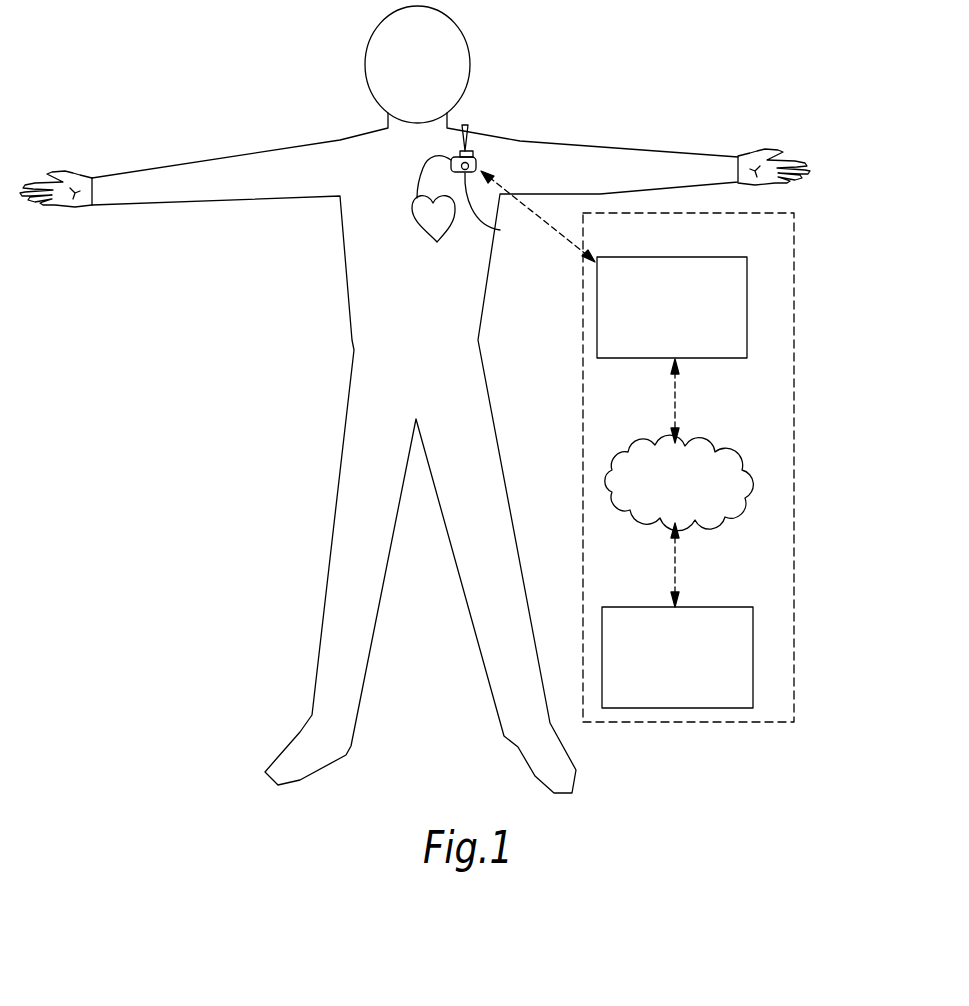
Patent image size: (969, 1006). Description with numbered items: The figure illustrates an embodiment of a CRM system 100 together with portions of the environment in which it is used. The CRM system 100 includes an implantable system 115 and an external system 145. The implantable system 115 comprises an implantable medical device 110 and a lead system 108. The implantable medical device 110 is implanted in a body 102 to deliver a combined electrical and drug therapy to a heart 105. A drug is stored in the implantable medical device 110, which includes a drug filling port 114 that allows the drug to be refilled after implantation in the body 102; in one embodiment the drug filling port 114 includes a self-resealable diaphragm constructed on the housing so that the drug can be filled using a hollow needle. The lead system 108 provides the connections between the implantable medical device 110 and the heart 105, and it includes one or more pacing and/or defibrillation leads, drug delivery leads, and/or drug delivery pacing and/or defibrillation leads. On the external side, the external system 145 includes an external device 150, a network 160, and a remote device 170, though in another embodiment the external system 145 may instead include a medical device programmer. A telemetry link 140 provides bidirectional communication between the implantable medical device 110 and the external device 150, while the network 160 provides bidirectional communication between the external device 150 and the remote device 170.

The CRM system 100 is at (757, 37).
The body 102 is at (353, 308).
The heart 105 is at (413, 220).
The lead system 108 is at (415, 173).
The implantable medical device 110 is at (477, 160).
The drug filling port 114 is at (499, 208).
The implantable system 115 is at (467, 126).
The telemetry link 140 is at (565, 241).
The external system 145 is at (782, 304).
The external device 150 is at (731, 257).
The network 160 is at (731, 449).
The remote device 170 is at (733, 606).